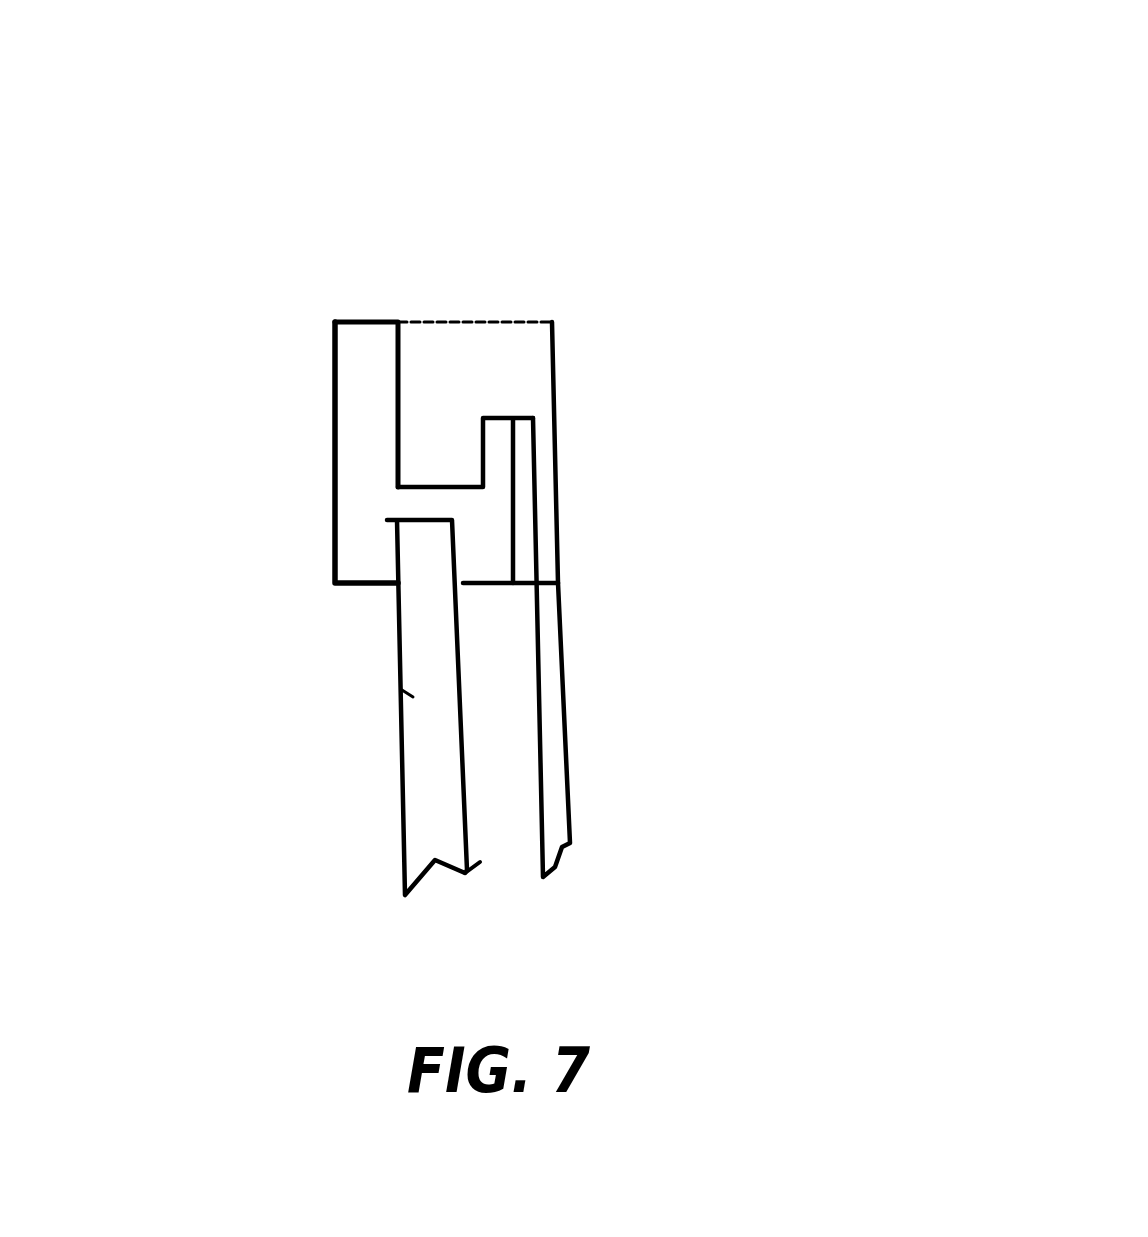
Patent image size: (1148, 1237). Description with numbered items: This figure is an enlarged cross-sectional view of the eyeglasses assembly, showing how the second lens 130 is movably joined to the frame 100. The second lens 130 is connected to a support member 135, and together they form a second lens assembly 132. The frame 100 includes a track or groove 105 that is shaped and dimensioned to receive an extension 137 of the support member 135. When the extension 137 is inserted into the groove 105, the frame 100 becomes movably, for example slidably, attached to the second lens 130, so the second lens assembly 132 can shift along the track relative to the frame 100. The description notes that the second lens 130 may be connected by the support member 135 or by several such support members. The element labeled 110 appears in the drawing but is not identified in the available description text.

The frame 100 is at (352, 380).
The groove 105 is at (430, 491).
The lower strip 110 is at (418, 765).
The second lens 130 is at (547, 630).
The second lens assembly 132 is at (623, 453).
The support member 135 is at (502, 348).
The extension 137 is at (440, 443).